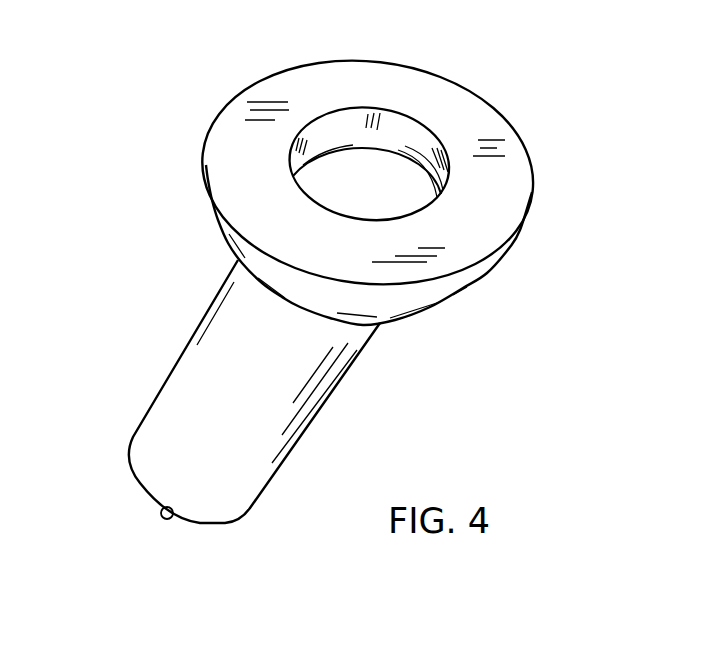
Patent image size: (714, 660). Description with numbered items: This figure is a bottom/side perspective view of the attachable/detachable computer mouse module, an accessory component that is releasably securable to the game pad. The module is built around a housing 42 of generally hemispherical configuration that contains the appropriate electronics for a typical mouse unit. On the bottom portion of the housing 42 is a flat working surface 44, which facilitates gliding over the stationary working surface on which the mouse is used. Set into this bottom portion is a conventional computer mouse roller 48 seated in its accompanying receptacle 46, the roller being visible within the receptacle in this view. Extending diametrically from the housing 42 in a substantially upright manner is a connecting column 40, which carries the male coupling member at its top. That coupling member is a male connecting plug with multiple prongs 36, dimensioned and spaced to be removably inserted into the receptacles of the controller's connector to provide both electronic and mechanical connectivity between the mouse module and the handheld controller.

The prongs 36 is at (161, 512).
The connecting column 40 is at (197, 361).
The housing 42 is at (478, 277).
The flat working surface 44 is at (252, 181).
The receptacle 46 is at (320, 134).
The computer mouse roller 48 is at (390, 164).